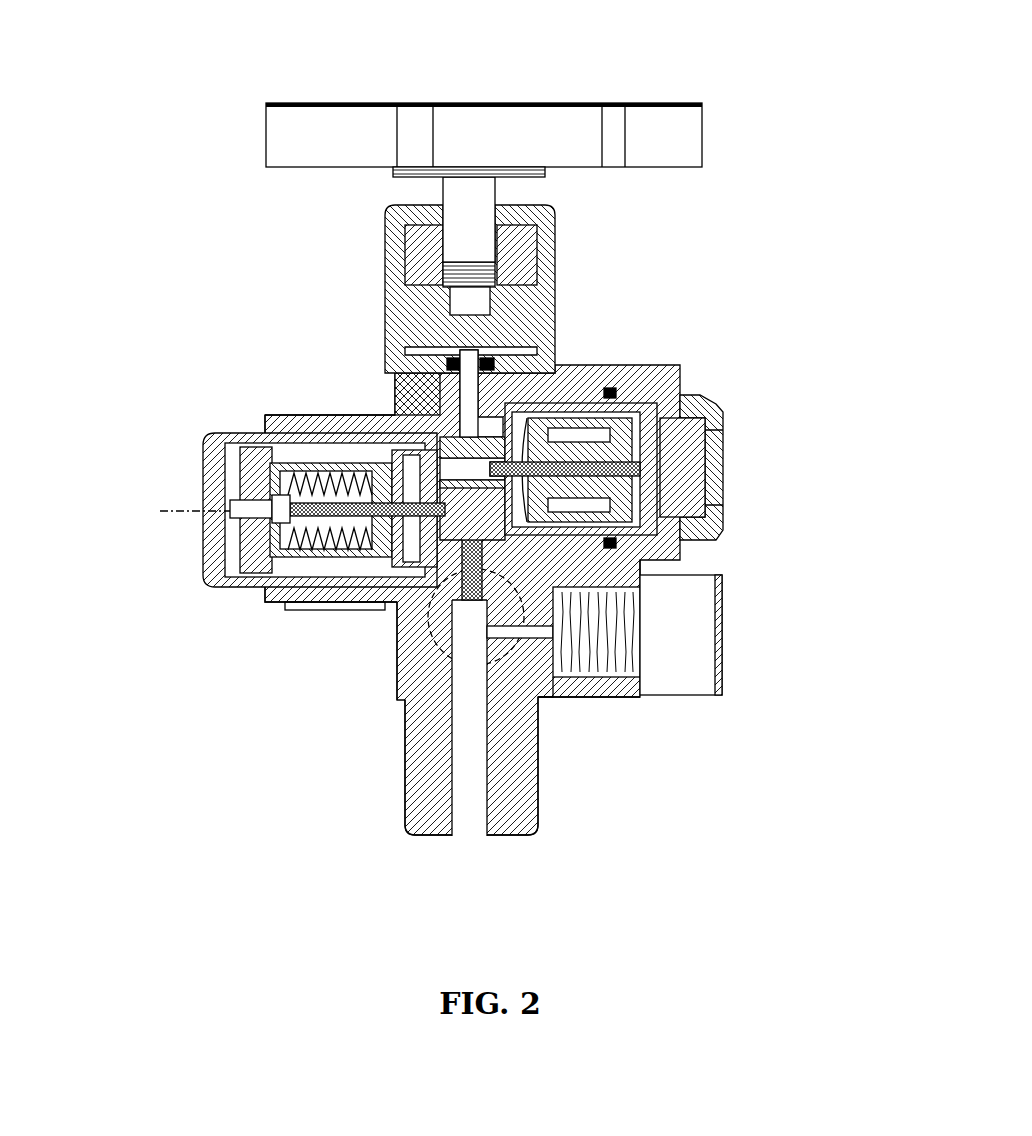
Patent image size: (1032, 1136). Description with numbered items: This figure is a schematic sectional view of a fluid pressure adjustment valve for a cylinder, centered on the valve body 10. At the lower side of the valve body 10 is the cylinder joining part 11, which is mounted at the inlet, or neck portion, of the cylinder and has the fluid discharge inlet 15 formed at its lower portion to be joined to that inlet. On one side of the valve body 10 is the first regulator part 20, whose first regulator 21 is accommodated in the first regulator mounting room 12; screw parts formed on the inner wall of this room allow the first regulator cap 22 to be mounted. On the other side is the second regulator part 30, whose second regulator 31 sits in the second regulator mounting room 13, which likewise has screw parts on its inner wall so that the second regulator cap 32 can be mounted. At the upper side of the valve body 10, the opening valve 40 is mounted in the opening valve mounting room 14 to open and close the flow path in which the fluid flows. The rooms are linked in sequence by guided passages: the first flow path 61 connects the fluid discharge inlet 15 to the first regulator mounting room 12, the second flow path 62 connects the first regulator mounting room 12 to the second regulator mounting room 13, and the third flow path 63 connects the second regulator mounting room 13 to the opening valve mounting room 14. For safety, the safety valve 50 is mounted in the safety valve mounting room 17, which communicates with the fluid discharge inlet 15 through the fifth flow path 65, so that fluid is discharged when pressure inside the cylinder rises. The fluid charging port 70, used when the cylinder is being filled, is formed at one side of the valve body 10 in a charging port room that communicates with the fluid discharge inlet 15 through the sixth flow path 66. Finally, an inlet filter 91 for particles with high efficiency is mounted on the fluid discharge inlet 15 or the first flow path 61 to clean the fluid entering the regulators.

The valve body 10 is at (555, 365).
The cylinder joining part 11 is at (405, 817).
The first regulator mounting room 12 is at (290, 600).
The second regulator mounting room 13 is at (643, 593).
The opening valve mounting room 14 is at (467, 397).
The fluid discharge inlet 15 is at (475, 810).
The safety valve mounting room 17 is at (558, 690).
The first regulator part 20 is at (250, 500).
The first regulator 21 is at (262, 590).
The first regulator cap 22 is at (203, 575).
The second regulator part 30 is at (690, 397).
The second regulator 31 is at (630, 385).
The second regulator cap 32 is at (720, 384).
The opening valve 40 is at (724, 106).
The safety valve 50 is at (710, 685).
The first flow path 61 is at (445, 528).
The second flow path 62 is at (445, 437).
The third flow path 63 is at (452, 395).
The fifth flow path 65 is at (543, 700).
The sixth flow path 66 is at (598, 690).
The fluid charging port 70 is at (456, 712).
The inlet filter 91 is at (446, 650).